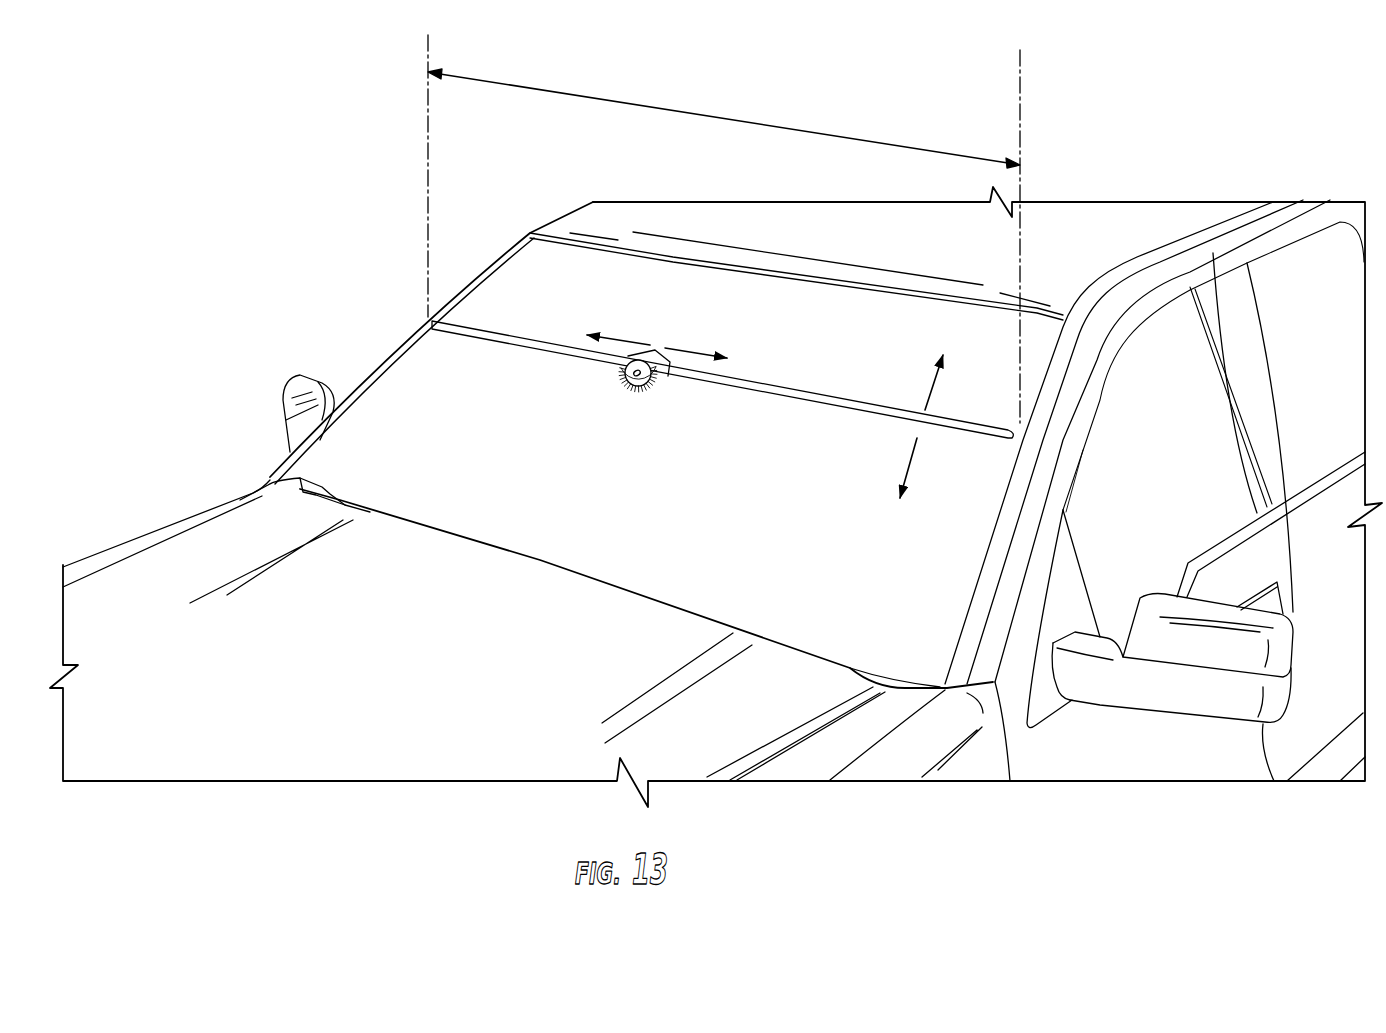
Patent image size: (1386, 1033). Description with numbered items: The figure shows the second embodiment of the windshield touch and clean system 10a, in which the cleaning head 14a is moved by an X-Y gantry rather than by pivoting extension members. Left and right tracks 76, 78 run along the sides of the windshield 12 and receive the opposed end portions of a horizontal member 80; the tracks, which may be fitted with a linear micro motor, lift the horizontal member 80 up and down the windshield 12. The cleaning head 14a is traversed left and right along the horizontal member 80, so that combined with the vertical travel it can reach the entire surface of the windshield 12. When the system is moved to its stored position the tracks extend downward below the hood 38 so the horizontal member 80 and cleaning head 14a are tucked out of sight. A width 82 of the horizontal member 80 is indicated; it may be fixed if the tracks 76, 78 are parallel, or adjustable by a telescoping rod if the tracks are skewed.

The windshield touch and clean system 10a is at (505, 297).
The windshield 12 is at (746, 545).
The cleaning head 14a is at (627, 378).
The hood 38 is at (493, 632).
The left track 76 is at (392, 388).
The right track 78 is at (995, 523).
The horizontal member 80 is at (780, 392).
The width 82 is at (705, 118).